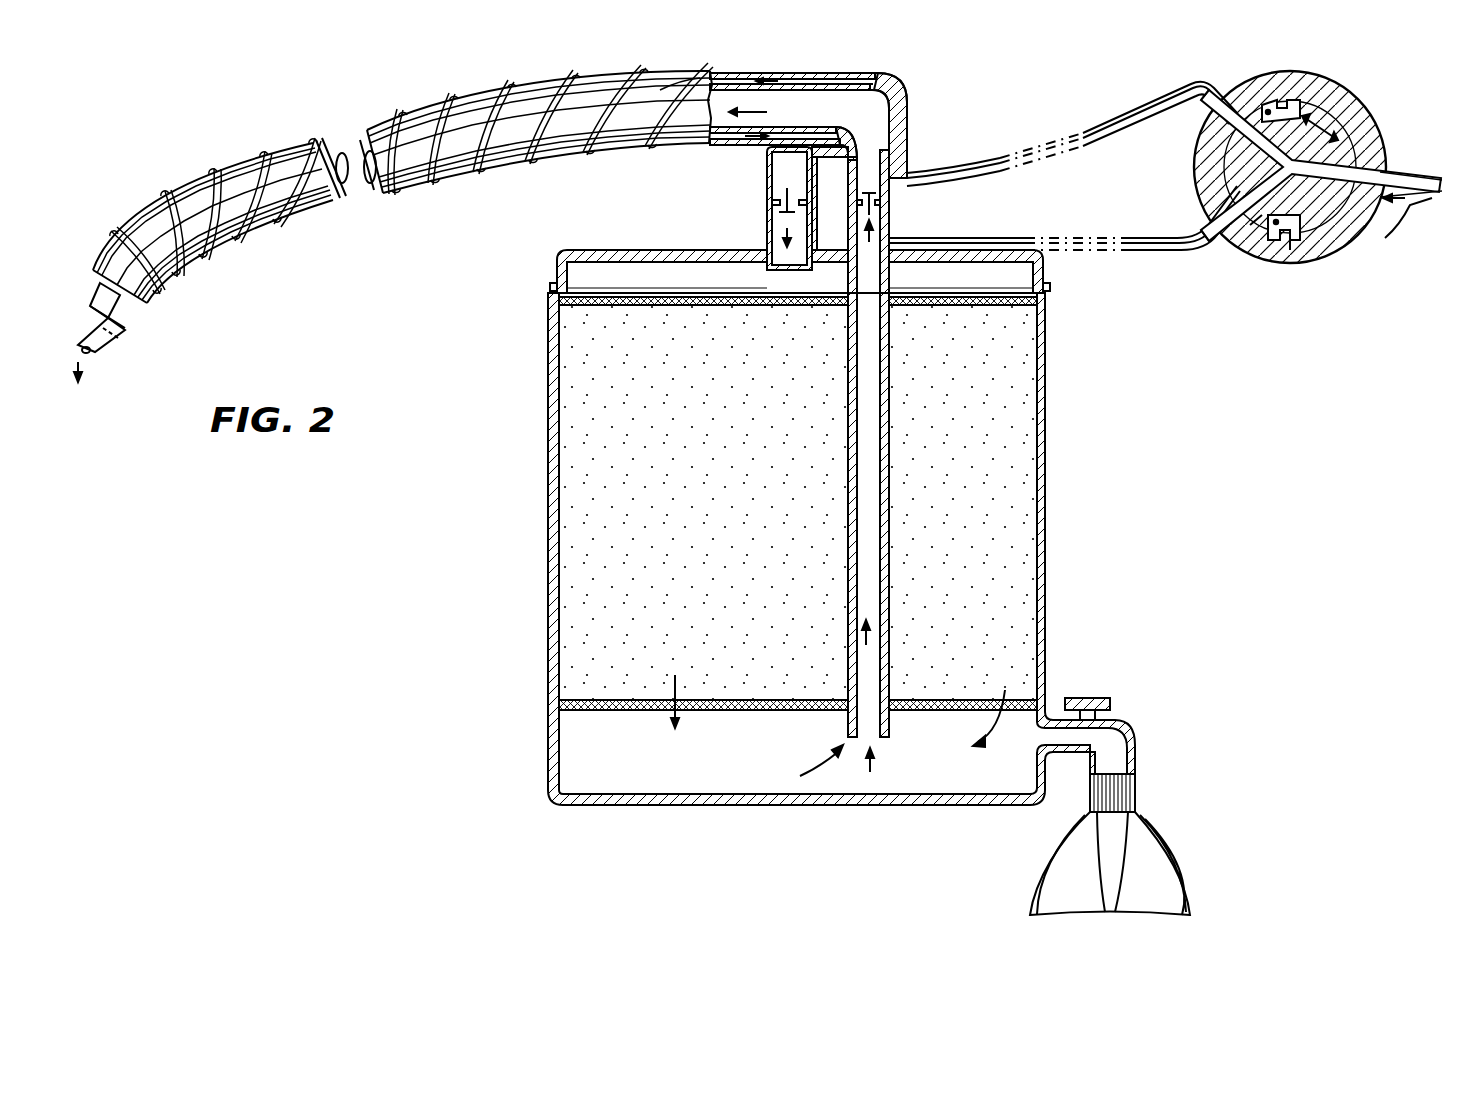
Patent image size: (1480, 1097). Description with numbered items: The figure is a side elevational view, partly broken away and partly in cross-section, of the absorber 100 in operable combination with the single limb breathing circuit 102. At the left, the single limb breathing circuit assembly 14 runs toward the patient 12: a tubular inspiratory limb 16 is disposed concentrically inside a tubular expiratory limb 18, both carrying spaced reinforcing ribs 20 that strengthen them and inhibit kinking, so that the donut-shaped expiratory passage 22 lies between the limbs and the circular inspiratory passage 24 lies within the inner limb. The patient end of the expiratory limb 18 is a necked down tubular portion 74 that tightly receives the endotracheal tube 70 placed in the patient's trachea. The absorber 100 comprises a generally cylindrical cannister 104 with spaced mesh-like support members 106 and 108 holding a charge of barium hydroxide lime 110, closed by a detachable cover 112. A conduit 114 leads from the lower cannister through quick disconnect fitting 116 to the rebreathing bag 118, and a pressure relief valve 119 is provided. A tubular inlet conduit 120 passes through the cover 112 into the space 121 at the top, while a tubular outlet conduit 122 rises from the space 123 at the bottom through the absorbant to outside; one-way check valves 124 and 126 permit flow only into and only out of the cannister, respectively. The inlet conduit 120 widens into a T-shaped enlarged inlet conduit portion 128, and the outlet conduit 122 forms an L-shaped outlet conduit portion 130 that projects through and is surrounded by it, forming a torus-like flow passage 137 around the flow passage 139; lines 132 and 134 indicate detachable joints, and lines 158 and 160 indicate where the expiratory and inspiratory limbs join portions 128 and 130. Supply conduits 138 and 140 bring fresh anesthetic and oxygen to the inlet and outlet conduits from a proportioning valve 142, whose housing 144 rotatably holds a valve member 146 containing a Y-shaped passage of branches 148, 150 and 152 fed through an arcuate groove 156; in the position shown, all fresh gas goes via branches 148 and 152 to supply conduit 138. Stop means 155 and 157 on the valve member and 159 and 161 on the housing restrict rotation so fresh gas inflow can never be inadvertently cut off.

The patient 12 is at (142, 376).
The single limb breathing circuit assembly 14 is at (338, 234).
The inspiratory limb 16 is at (520, 105).
The expiratory limb 18 is at (245, 238).
The reinforcing ribs 20 is at (548, 128).
The expiratory passage 22 is at (632, 78).
The inspiratory passage 24 is at (215, 190).
The endotracheal tube 70 is at (115, 315).
The necked down tubular portion 74 is at (105, 288).
The absorber 100 is at (859, 562).
The single limb breathing circuit 102 is at (547, 131).
The cannister 104 is at (552, 688).
The mesh-like support member 106 is at (640, 297).
The mesh-like support member 108 is at (650, 708).
The carbon dioxide absorbant 110 is at (590, 583).
The cover 112 is at (557, 270).
The conduit 114 is at (1095, 760).
The quick disconnect fitting 116 is at (1130, 785).
The rebreathing bag 118 is at (1170, 880).
The pressure relief valve 119 is at (1100, 703).
The inlet conduit 120 is at (775, 208).
The space 121 is at (750, 281).
The outlet conduit 122 is at (874, 452).
The space 123 is at (730, 761).
The one-way check valve 124 is at (785, 205).
The one-way check valve 126 is at (889, 208).
The enlarged tubular inlet conduit portion 128 is at (823, 104).
The tubular outlet conduit portion 130 is at (780, 93).
The detachable connection line 132 is at (775, 200).
The detachable connection line 134 is at (873, 152).
The torus-like flow passage 137 is at (825, 83).
The supply conduit 138 is at (960, 243).
The flow passage 139 is at (850, 105).
The supply conduit 140 is at (978, 172).
The proportioning valve 142 is at (1294, 183).
The valve housing 144 is at (1257, 93).
The valve member 146 is at (1220, 196).
The flow passage branch 148 is at (1350, 150).
The flow passage branch 150 is at (1215, 152).
The flow passage branch 152 is at (1262, 245).
The stop means 155 is at (1262, 100).
The arcuate groove 156 is at (1370, 158).
The stop means 157 is at (1268, 258).
The connection line 158 is at (665, 88).
The stop means 159 is at (1290, 92).
The connection line 160 is at (650, 115).
The stop means 161 is at (1290, 272).